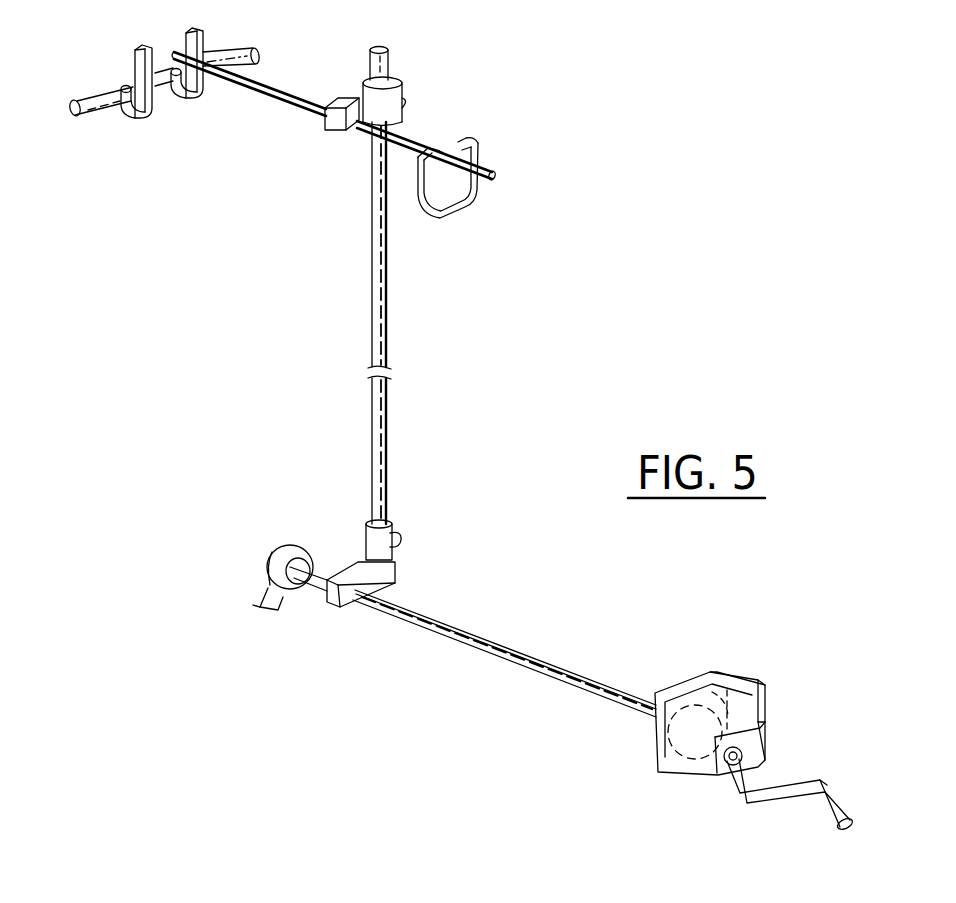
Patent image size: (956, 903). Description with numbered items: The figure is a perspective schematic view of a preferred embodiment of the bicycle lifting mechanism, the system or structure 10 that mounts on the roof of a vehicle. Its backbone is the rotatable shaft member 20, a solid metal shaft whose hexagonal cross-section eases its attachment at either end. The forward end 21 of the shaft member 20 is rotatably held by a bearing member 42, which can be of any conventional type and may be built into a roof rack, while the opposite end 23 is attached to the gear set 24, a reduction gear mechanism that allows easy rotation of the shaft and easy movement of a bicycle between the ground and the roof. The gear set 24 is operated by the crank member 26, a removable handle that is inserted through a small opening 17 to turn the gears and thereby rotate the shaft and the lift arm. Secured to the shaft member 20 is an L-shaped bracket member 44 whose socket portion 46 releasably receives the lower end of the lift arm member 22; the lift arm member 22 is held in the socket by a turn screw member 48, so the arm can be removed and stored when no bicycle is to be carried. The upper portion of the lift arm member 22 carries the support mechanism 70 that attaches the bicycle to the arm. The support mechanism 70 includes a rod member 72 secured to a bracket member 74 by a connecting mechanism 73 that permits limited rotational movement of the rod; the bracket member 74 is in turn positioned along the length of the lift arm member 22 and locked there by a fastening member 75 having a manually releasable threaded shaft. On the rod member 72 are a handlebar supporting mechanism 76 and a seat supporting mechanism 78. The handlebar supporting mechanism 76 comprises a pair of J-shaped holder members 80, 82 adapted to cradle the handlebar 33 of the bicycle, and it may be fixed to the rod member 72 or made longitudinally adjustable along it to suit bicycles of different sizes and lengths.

The system 10 is at (400, 698).
The small opening 17 is at (727, 777).
The rotatable shaft member 20 is at (494, 642).
The forward end 21 is at (307, 588).
The lift arm member 22 is at (382, 395).
The end 23 is at (652, 718).
The gear set 24 is at (762, 693).
The crank member 26 is at (788, 781).
The handlebar 33 is at (242, 53).
The bearing member 42 is at (293, 546).
The L-shaped bracket member 44 is at (397, 583).
The socket portion 46 is at (392, 554).
The turn screw member 48 is at (397, 540).
The support mechanism 70 is at (310, 147).
The rod member 72 is at (277, 89).
The connecting mechanism 73 is at (349, 107).
The bracket member 74 is at (355, 133).
The fastening member 75 is at (409, 100).
The handlebar supporting mechanism 76 is at (150, 111).
The seat supporting mechanism 78 is at (474, 208).
The J-shaped holder member 80 is at (132, 112).
The J-shaped holder member 82 is at (196, 92).